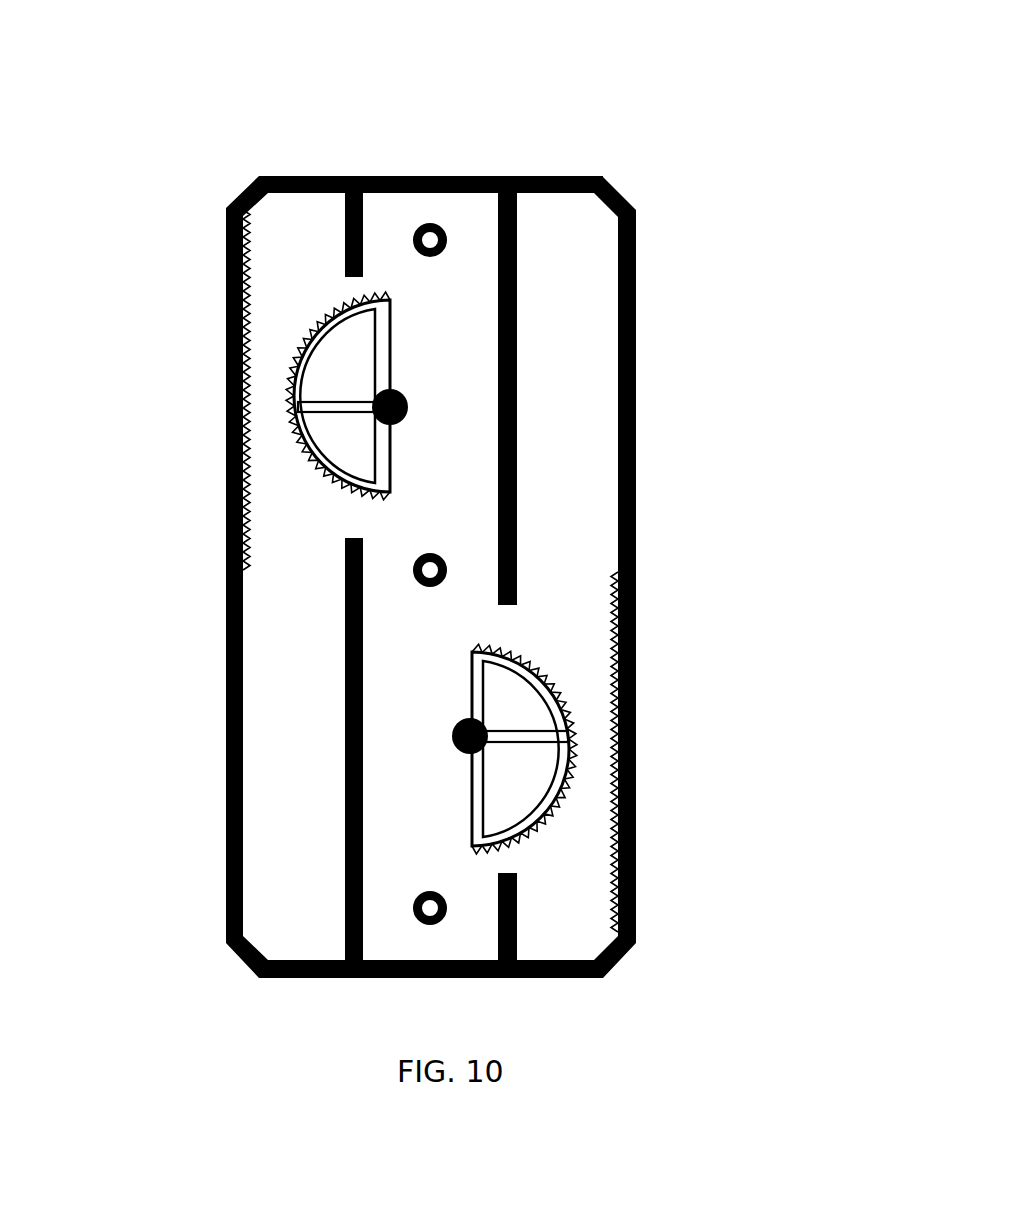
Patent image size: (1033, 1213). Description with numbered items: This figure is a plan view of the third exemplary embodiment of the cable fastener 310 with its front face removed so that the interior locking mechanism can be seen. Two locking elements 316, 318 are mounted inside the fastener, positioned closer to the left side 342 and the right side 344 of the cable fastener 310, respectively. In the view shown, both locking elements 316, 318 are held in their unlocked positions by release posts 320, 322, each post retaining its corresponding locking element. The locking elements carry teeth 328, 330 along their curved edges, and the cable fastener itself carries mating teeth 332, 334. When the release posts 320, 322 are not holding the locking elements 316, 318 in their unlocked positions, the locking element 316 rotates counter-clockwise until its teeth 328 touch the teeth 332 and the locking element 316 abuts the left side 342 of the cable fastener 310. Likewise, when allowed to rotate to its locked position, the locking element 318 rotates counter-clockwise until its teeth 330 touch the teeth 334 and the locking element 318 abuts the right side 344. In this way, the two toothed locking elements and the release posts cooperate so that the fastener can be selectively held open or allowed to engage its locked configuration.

The cable fastener 310 is at (198, 142).
The locking element 316 is at (388, 347).
The locking element 318 is at (472, 792).
The release post 320 is at (293, 405).
The release post 322 is at (566, 737).
The teeth 328 is at (293, 343).
The teeth 330 is at (552, 813).
The teeth 332 is at (233, 212).
The teeth 334 is at (634, 945).
The left side 342 is at (226, 642).
The right side 344 is at (636, 513).